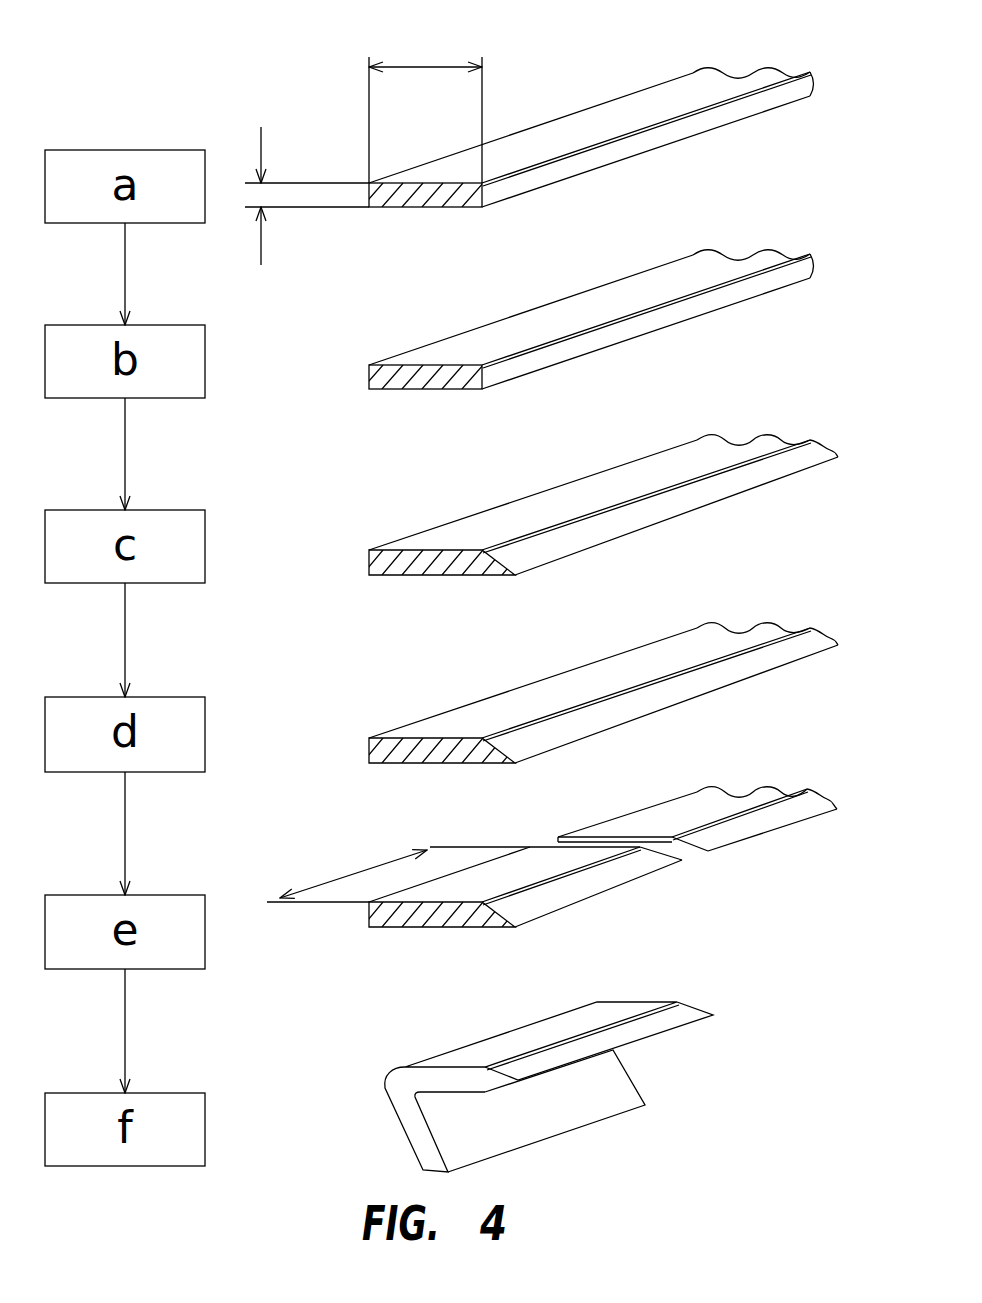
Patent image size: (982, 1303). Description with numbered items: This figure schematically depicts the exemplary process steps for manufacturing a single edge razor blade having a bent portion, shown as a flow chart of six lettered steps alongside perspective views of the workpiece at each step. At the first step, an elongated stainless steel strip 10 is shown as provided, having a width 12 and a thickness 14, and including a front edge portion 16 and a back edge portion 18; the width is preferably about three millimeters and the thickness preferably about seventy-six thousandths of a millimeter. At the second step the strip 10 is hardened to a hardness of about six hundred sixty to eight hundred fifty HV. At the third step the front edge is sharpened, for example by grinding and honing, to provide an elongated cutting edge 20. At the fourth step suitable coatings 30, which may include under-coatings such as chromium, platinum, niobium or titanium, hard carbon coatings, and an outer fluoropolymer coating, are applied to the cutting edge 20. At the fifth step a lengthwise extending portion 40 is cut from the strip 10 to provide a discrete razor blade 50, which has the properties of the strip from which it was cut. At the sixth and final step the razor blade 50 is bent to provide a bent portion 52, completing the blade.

The elongated stainless steel strip 10 is at (552, 599).
The width 12 is at (428, 65).
The thickness 14 is at (263, 250).
The front edge portion 16 is at (690, 135).
The back edge portion 18 is at (369, 198).
The elongated cutting edge 20 is at (657, 517).
The coating 30 is at (690, 675).
The lengthwise extending portion 40 is at (378, 866).
The discrete razor blade 50 is at (505, 826).
The bent portion 52 is at (390, 1077).